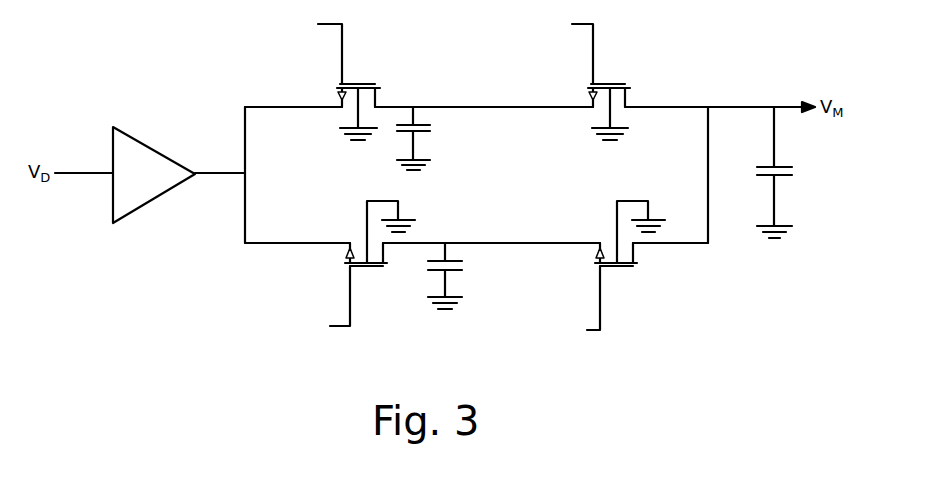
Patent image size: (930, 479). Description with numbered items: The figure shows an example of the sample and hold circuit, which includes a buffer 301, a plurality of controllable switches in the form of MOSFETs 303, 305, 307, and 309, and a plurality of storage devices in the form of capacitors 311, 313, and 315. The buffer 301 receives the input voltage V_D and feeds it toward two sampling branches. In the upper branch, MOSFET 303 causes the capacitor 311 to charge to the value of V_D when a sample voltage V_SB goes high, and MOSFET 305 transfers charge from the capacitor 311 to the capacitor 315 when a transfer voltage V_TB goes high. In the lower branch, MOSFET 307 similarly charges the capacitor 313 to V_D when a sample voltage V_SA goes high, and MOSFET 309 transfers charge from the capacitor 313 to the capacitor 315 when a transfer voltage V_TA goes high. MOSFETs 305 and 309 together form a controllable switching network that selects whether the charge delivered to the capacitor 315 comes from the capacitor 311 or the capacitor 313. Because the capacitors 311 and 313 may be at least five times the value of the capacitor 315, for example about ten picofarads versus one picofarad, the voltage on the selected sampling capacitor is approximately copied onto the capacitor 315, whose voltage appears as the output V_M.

The buffer 301 is at (138, 138).
The MOSFET 303 is at (365, 70).
The MOSFET 305 is at (617, 70).
The MOSFET 307 is at (359, 238).
The MOSFET 309 is at (610, 238).
The capacitor 311 is at (437, 135).
The capacitor 313 is at (468, 268).
The capacitor 315 is at (797, 170).